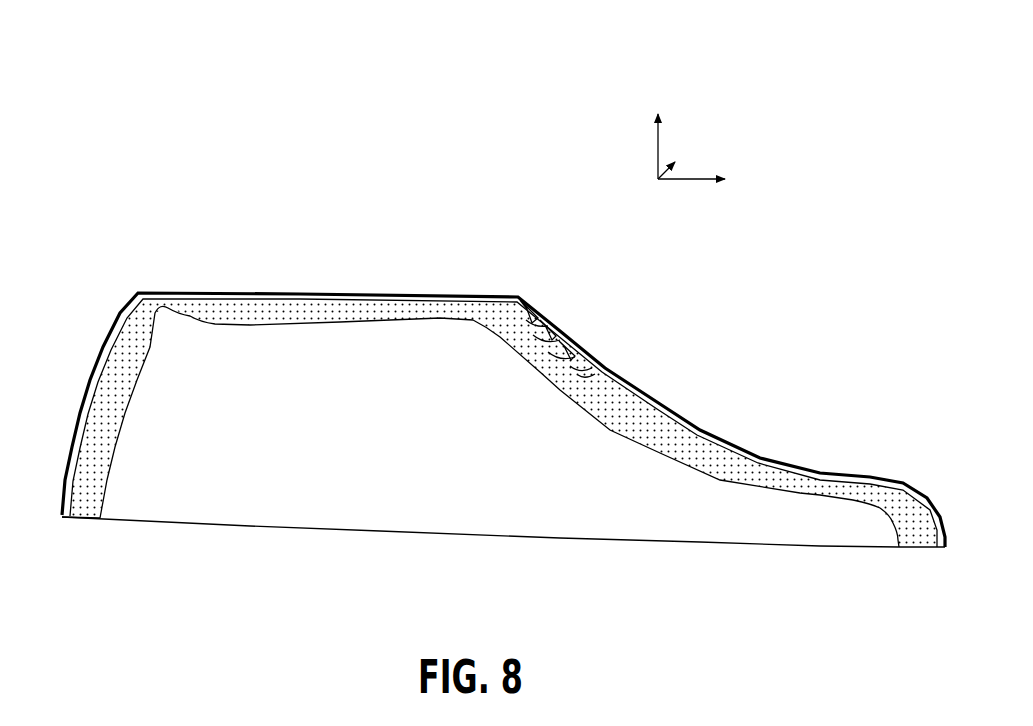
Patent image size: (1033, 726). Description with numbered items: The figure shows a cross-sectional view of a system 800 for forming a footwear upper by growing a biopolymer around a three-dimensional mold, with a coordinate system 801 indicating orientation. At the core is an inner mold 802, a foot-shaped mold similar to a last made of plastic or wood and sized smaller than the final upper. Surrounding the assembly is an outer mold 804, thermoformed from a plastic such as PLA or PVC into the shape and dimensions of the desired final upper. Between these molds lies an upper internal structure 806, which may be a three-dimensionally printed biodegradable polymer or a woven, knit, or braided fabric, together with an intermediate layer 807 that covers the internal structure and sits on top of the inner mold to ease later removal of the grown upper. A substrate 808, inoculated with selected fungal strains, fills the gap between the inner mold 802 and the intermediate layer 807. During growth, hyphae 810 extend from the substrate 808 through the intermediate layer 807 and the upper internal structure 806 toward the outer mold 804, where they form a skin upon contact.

The system 800 is at (860, 46).
The coordinate system 801 is at (714, 140).
The inner mold 802 is at (428, 466).
The outer mold 804 is at (118, 312).
The upper internal structure 806 is at (80, 428).
The intermediate layer 807 is at (78, 458).
The substrate 808 is at (118, 384).
The hyphae 810 is at (578, 318).